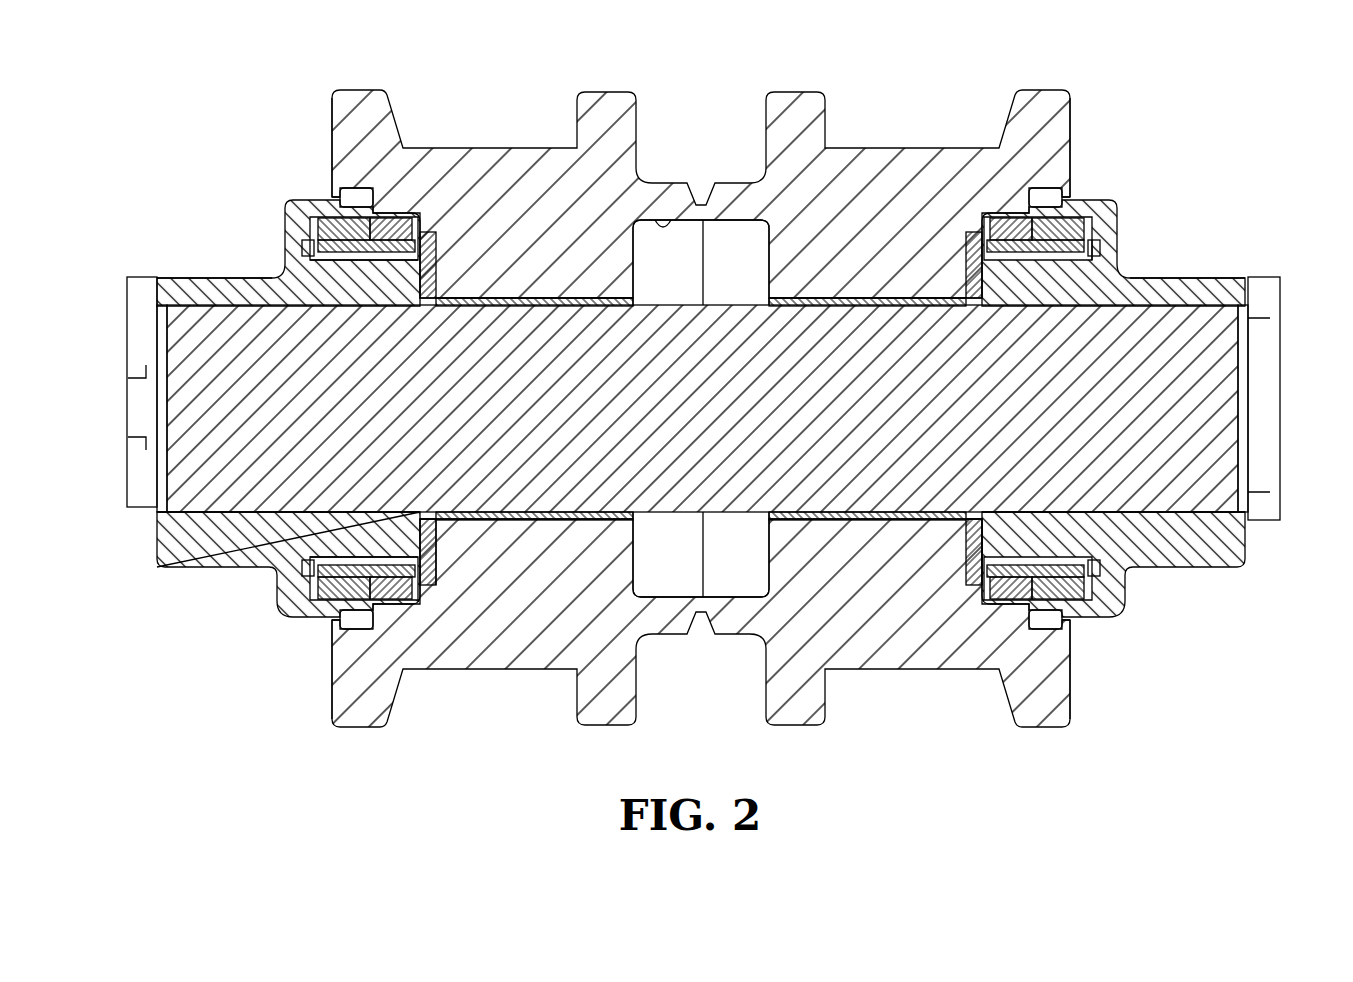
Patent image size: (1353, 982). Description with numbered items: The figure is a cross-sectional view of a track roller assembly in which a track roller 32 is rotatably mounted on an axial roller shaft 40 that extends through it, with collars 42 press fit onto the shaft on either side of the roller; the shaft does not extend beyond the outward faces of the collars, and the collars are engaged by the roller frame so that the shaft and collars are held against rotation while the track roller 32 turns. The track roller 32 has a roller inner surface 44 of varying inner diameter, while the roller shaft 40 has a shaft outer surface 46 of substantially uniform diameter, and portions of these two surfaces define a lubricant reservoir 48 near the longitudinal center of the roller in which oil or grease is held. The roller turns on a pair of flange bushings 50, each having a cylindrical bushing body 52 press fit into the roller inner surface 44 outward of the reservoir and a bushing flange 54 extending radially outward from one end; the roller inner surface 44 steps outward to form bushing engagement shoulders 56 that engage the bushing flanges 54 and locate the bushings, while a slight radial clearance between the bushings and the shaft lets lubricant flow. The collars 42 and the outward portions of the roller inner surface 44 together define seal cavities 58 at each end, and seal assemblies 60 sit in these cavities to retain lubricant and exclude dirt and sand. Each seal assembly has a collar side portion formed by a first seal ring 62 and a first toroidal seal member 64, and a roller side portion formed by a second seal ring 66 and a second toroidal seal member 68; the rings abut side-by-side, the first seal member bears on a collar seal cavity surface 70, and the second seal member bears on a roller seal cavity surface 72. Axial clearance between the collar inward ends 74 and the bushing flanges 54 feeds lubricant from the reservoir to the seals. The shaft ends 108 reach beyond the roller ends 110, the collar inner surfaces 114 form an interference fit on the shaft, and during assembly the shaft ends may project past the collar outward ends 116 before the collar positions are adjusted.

The track roller 32 is at (915, 182).
The roller shaft 40 is at (170, 492).
The collars 42 is at (215, 275).
The roller inner surface 44 is at (673, 224).
The shaft outer surface 46 is at (738, 520).
The lubricant reservoir 48 is at (742, 242).
The flange bushings 50 is at (860, 295).
The bushing body 52 is at (818, 292).
The bushing flange 54 is at (440, 540).
The bushing engagement shoulders 56 is at (452, 282).
The seal cavities 58 is at (312, 252).
The seal assemblies 60 is at (366, 215).
The first seal ring 62 is at (313, 578).
The first toroidal seal member 64 is at (342, 208).
The second seal ring 66 is at (440, 232).
The second toroidal seal member 68 is at (395, 222).
The collar seal cavity surface 70 is at (288, 216).
The roller seal cavity surface 72 is at (335, 622).
The collar inward ends 74 is at (440, 290).
The shaft ends 108 is at (155, 327).
The roller ends 110 is at (331, 100).
The collar inner surfaces 114 is at (163, 346).
The collar outward ends 116 is at (153, 283).